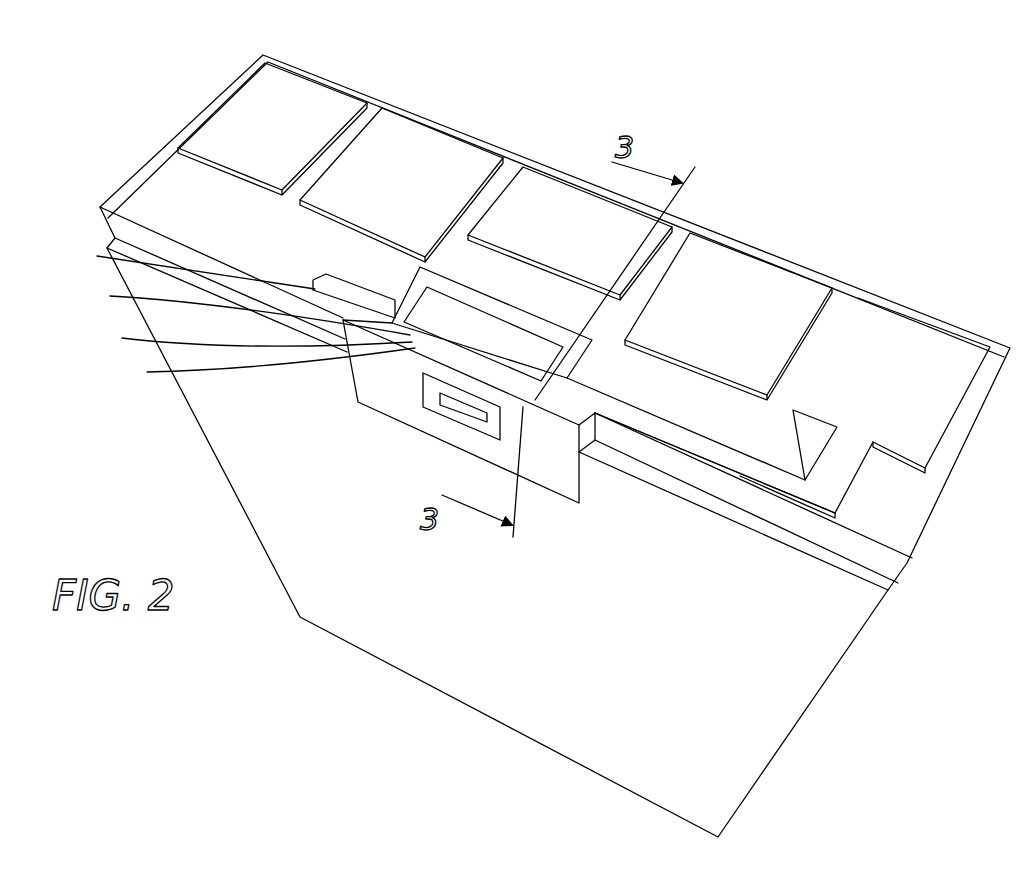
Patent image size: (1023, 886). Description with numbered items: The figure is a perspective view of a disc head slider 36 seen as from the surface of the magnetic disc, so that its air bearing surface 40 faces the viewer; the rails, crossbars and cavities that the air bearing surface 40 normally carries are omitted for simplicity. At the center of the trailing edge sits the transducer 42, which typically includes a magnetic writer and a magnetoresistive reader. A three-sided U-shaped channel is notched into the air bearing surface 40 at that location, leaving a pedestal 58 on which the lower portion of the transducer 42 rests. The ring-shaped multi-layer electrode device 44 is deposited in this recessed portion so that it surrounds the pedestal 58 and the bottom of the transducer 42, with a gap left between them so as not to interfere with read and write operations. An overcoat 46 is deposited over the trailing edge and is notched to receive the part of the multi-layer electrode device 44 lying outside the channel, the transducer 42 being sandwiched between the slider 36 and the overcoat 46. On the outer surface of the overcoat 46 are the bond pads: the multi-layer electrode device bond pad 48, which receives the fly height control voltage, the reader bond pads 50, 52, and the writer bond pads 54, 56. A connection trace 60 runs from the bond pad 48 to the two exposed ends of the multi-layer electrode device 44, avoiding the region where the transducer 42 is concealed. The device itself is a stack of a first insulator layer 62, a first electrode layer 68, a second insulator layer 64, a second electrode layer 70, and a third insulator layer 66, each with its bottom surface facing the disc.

The disc head slider 36 is at (813, 710).
The air bearing surface 40 is at (585, 655).
The transducer 42 is at (452, 405).
The multi-layer electrode device 44 is at (565, 493).
The overcoat 46 is at (930, 528).
The multi-layer electrode device bond pad 48 is at (885, 340).
The reader bond pad 50 is at (715, 283).
The reader bond pad 52 is at (543, 202).
The writer bond pad 54 is at (405, 155).
The writer bond pad 56 is at (286, 102).
The pedestal 58 is at (470, 420).
The connection trace 60 is at (772, 475).
The first insulator layer 62 is at (352, 277).
The second insulator layer 64 is at (241, 311).
The third insulator layer 66 is at (259, 372).
The first electrode layer 68 is at (188, 264).
The second electrode layer 70 is at (245, 347).